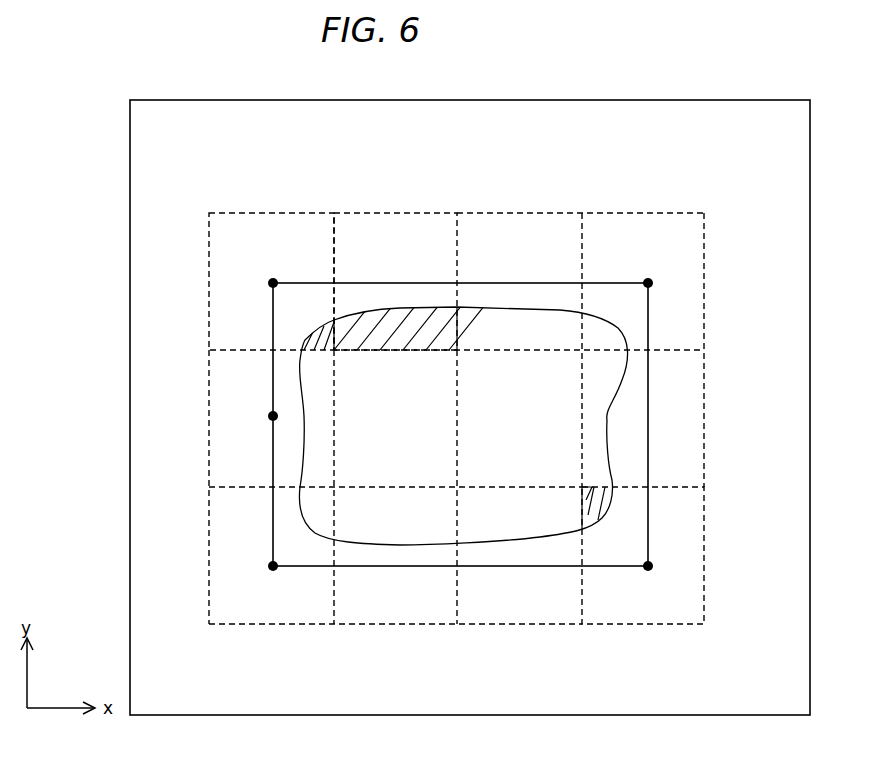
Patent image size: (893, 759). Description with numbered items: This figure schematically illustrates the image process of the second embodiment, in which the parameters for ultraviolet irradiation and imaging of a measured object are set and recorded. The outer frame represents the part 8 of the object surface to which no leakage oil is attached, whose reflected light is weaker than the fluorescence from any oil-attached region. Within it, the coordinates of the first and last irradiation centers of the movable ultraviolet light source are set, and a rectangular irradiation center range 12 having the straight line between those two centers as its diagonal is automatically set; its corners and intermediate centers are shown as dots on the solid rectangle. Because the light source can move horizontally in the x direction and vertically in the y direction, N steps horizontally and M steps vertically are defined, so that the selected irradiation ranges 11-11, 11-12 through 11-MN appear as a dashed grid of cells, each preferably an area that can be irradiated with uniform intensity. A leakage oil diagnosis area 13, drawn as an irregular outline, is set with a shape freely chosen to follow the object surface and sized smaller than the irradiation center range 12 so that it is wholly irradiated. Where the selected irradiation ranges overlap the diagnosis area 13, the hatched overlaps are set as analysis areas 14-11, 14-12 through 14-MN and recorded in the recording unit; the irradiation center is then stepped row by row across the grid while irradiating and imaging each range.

The part to which leakage oil is not attached 8 is at (724, 101).
The selected irradiation range 11-11 is at (270, 213).
The selected irradiation range 11-12 is at (400, 213).
The selected irradiation range 11-MN is at (643, 624).
The irradiation center range 12 is at (651, 310).
The leakage oil diagnosis area 13 is at (608, 418).
The analysis area 14-11 is at (306, 336).
The analysis area 14-12 is at (385, 330).
The analysis area 14-MN is at (612, 503).